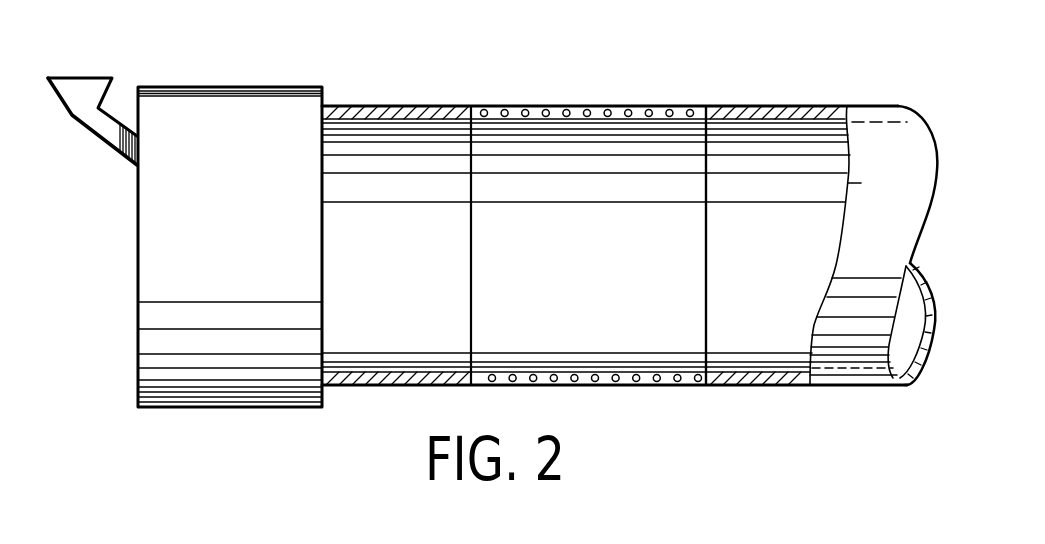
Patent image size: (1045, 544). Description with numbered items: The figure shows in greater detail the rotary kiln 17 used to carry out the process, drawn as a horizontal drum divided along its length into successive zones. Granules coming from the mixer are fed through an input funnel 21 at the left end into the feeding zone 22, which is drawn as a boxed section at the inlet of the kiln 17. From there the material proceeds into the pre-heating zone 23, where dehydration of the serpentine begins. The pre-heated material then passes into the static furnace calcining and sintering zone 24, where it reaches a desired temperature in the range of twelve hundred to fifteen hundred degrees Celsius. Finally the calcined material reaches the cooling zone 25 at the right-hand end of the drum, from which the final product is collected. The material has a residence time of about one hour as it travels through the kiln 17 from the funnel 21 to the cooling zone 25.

The kiln 17 is at (693, 88).
The input funnel 21 is at (77, 112).
The feeding zone 22 is at (250, 295).
The pre-heating zone 23 is at (415, 308).
The static furnace calcining and sintering zone 24 is at (608, 308).
The cooling zone 25 is at (795, 308).